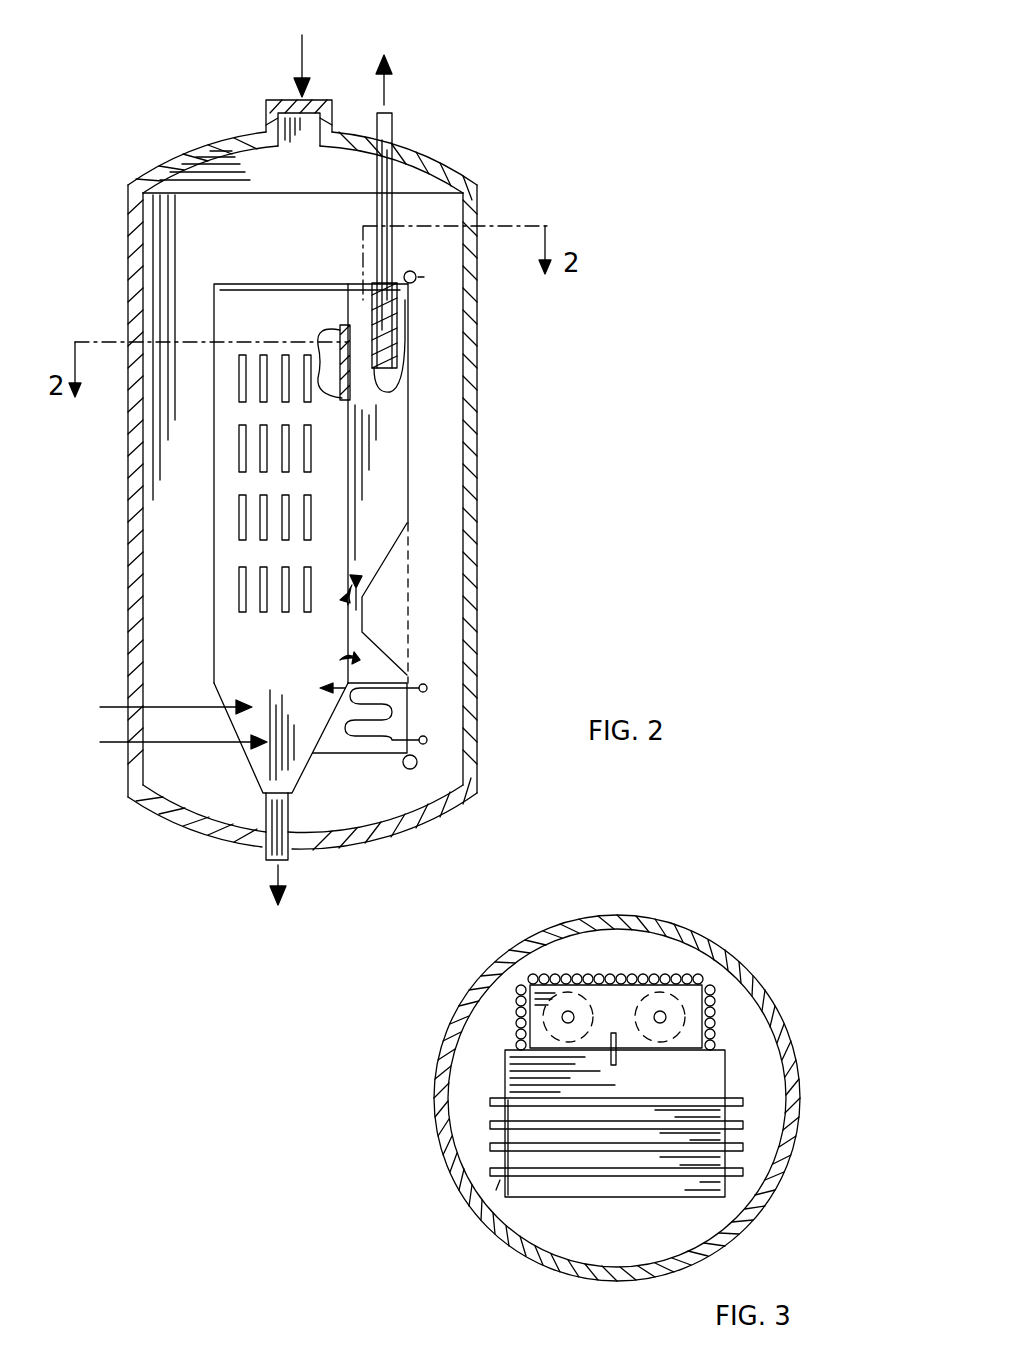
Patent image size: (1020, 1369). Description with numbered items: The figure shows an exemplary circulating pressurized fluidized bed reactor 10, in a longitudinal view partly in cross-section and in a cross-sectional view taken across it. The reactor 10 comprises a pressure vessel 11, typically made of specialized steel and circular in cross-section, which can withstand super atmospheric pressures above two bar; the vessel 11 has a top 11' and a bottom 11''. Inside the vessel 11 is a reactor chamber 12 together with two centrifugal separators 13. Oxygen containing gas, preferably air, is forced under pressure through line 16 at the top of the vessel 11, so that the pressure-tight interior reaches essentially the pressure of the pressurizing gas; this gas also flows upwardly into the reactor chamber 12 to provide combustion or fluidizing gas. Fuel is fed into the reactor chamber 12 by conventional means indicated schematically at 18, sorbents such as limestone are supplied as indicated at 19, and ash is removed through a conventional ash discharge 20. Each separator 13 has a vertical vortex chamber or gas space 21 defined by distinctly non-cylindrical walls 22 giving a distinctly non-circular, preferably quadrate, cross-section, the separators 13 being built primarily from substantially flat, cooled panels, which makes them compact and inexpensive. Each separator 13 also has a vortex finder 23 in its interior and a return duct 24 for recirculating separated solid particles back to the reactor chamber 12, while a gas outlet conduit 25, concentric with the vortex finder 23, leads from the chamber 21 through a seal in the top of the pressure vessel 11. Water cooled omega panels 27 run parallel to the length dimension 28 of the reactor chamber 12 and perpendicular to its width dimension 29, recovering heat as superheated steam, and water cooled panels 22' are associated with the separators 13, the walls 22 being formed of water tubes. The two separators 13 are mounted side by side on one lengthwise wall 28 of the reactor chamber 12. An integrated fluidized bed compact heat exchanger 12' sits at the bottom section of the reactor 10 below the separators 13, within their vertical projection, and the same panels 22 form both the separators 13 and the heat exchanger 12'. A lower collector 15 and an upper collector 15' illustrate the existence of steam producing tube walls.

In FIG. 2, the reactor 10 is at (478, 156).
In FIG. 3, the reactor 10 is at (767, 1220).
In FIG. 2, the pressure vessel 11 is at (347, 491).
In FIG. 3, the pressure vessel 11 is at (659, 1098).
In FIG. 2, the top of the vessel 11' is at (329, 130).
In FIG. 2, the bottom of the vessel 11'' is at (348, 814).
In FIG. 2, the reactor chamber 12 is at (135, 347).
In FIG. 3, the reactor chamber 12 is at (454, 1235).
In FIG. 2, the compact heat exchanger (CHEX) 12' is at (434, 702).
In FIG. 2, the centrifugal separator 13 is at (417, 473).
In FIG. 3, the centrifugal separator 13 is at (668, 990).
In FIG. 2, the lower collector 15 is at (416, 780).
In FIG. 2, the upper collector 15' is at (477, 279).
In FIG. 2, the line for pressurizing gas 16 is at (303, 60).
In FIG. 2, the fuel feeding means 18 is at (160, 700).
In FIG. 2, the sorbent feeding means 19 is at (165, 745).
In FIG. 2, the ash discharge 20 is at (285, 850).
In FIG. 2, the vortex chamber 21 is at (405, 325).
In FIG. 3, the vortex chamber 21 is at (700, 1000).
In FIG. 2, the walls of the separator 22 is at (447, 483).
In FIG. 3, the walls of the separator 22 is at (593, 1025).
In FIG. 3, the water cooled panels 22' is at (694, 928).
In FIG. 2, the vortex finder 23 is at (397, 288).
In FIG. 2, the return duct 24 is at (368, 548).
In FIG. 2, the gas outlet conduit 25 is at (387, 140).
In FIG. 3, the gas outlet conduit 25 is at (565, 1010).
In FIG. 2, the omega panels 27 is at (240, 458).
In FIG. 3, the omega panels 27 is at (490, 1147).
In FIG. 2, the length dimension of the reactor chamber 28 is at (214, 325).
In FIG. 3, the length dimension of the reactor chamber 28 is at (595, 1197).
In FIG. 2, the width dimension of the reactor chamber 29 is at (273, 320).
In FIG. 3, the width dimension of the reactor chamber 29 is at (490, 1172).